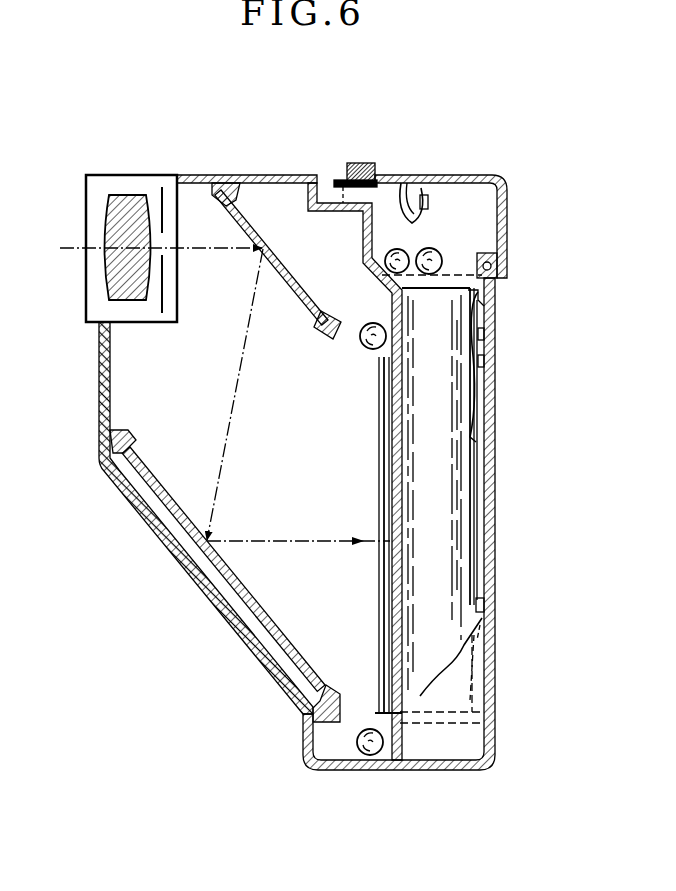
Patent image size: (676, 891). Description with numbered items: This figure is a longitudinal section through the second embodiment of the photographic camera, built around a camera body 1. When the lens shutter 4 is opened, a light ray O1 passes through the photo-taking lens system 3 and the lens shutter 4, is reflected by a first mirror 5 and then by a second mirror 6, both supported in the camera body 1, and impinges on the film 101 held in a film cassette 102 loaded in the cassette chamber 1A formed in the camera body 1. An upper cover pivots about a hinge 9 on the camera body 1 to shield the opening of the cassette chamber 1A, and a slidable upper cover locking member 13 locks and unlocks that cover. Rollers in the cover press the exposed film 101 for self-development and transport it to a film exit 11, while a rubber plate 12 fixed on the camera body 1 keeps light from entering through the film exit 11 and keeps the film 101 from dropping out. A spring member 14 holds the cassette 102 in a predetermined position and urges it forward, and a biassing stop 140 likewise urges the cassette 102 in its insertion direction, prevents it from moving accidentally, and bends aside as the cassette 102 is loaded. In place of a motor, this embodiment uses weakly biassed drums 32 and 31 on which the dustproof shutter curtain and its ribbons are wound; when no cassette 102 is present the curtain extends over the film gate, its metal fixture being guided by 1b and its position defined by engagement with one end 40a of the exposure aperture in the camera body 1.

The camera body 1 is at (190, 572).
The cassette chamber 1A is at (478, 465).
The guide 1b is at (383, 612).
The photo-taking lens system 3 is at (131, 203).
The lens shutter 4 is at (165, 197).
The first mirror 5 is at (264, 246).
The second mirror 6 is at (250, 617).
The hinge 9 is at (498, 268).
The film exit 11 is at (410, 185).
The rubber plate 12 is at (428, 204).
The upper cover locking member 13 is at (361, 162).
The spring member 14 is at (478, 420).
The drum 31 is at (370, 323).
The drum 32 is at (371, 756).
The end of exposure aperture 40a is at (396, 365).
The film 101 is at (399, 255).
The film cassette 102 is at (440, 258).
The stop 140 is at (489, 297).
The light ray O1 is at (212, 391).